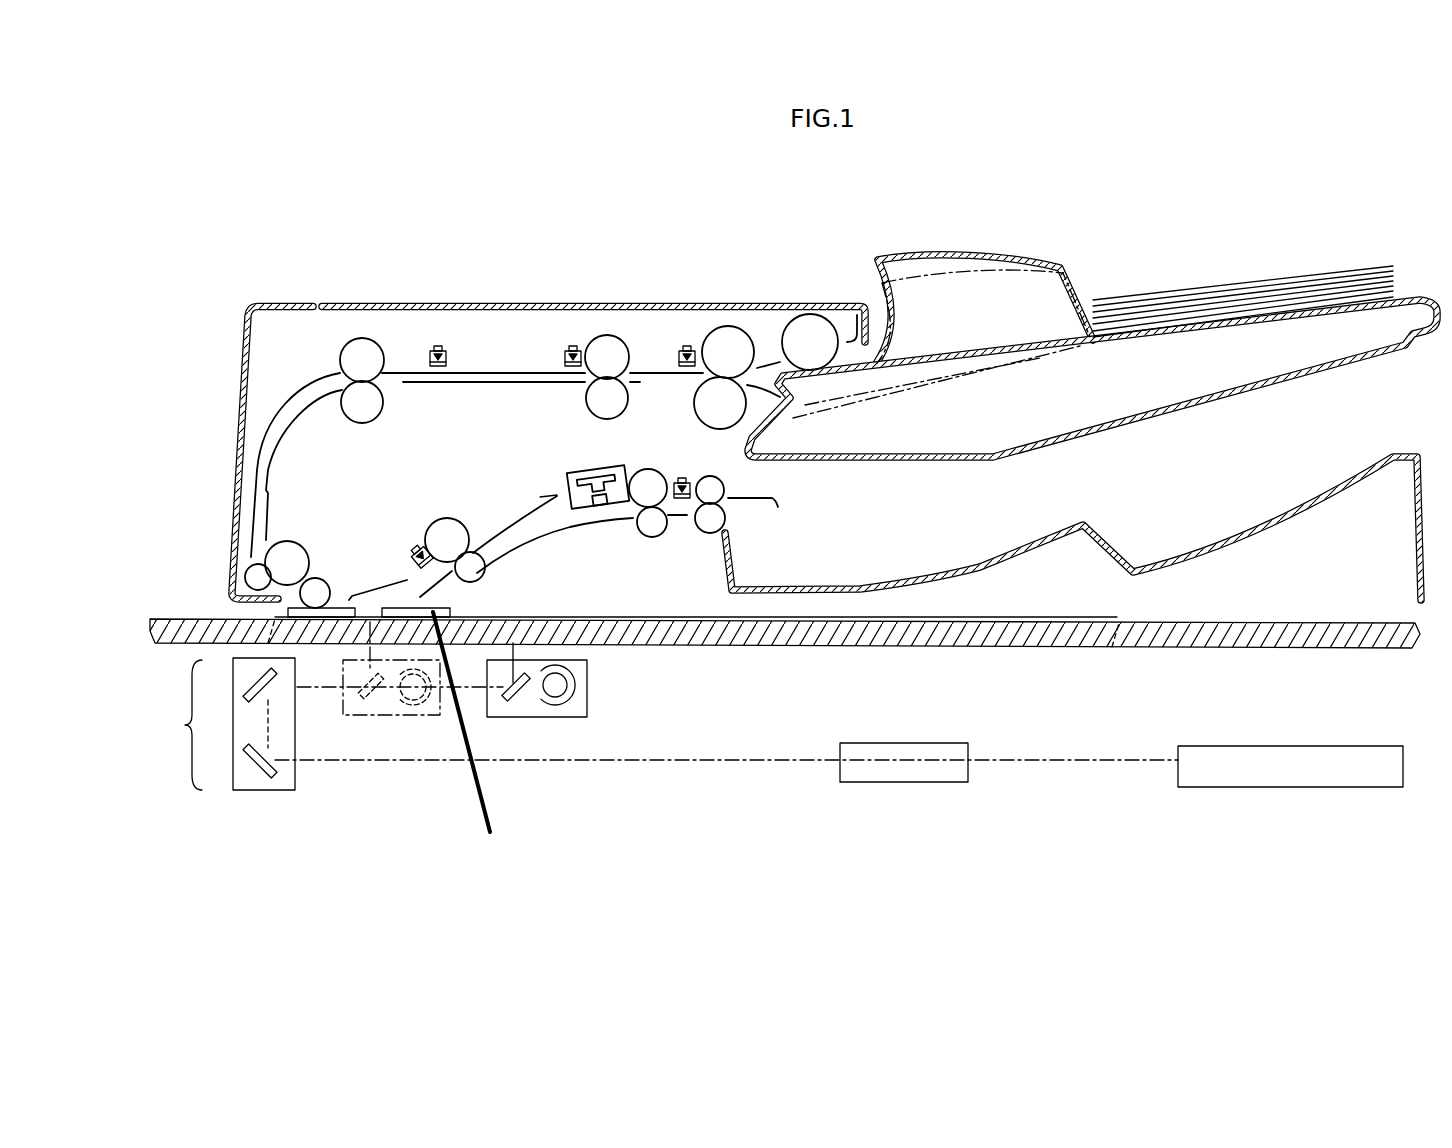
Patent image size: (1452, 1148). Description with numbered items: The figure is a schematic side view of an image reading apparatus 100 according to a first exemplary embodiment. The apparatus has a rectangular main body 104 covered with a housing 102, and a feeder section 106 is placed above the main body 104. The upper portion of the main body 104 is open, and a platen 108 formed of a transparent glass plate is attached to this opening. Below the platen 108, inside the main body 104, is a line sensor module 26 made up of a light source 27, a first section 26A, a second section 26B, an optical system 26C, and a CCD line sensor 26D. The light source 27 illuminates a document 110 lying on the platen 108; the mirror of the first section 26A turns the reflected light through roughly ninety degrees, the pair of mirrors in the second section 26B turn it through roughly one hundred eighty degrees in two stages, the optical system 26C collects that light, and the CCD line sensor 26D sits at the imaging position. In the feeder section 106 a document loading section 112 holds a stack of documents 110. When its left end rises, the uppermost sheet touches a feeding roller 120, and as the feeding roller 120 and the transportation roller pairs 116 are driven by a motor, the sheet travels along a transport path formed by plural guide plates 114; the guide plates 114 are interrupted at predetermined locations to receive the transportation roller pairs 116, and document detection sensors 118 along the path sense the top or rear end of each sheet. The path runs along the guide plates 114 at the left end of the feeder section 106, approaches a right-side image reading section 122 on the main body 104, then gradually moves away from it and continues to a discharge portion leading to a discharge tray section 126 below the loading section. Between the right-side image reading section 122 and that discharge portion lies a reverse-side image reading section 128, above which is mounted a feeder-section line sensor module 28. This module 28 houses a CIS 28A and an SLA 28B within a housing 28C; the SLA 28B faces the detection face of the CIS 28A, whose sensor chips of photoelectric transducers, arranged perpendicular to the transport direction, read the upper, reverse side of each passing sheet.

The image reading apparatus 100 is at (1244, 221).
The housing 102 is at (205, 617).
The main body 104 is at (406, 800).
The feeder section 106 is at (789, 299).
The platen 108 is at (830, 646).
The document 110 is at (607, 335).
The document loading section 112 is at (1118, 332).
The guide plates 114 is at (280, 405).
The transportation roller pairs 116 is at (362, 338).
The document detection sensors 118 is at (440, 346).
The feeding roller 120 is at (820, 314).
The right-side image reading section 122 is at (376, 620).
The discharge tray section 126 is at (978, 565).
The reverse-side image reading section 128 is at (584, 529).
The line sensor module 26 is at (776, 751).
The first section 26A is at (563, 726).
The second section 26B is at (267, 792).
The optical system 26C is at (887, 783).
The CCD line sensor 26D is at (1240, 788).
The light source 27 is at (542, 703).
The feeder-section line sensor module 28 is at (570, 453).
The CIS 28A is at (593, 470).
The SLA 28B is at (597, 484).
The housing 28C is at (599, 500).